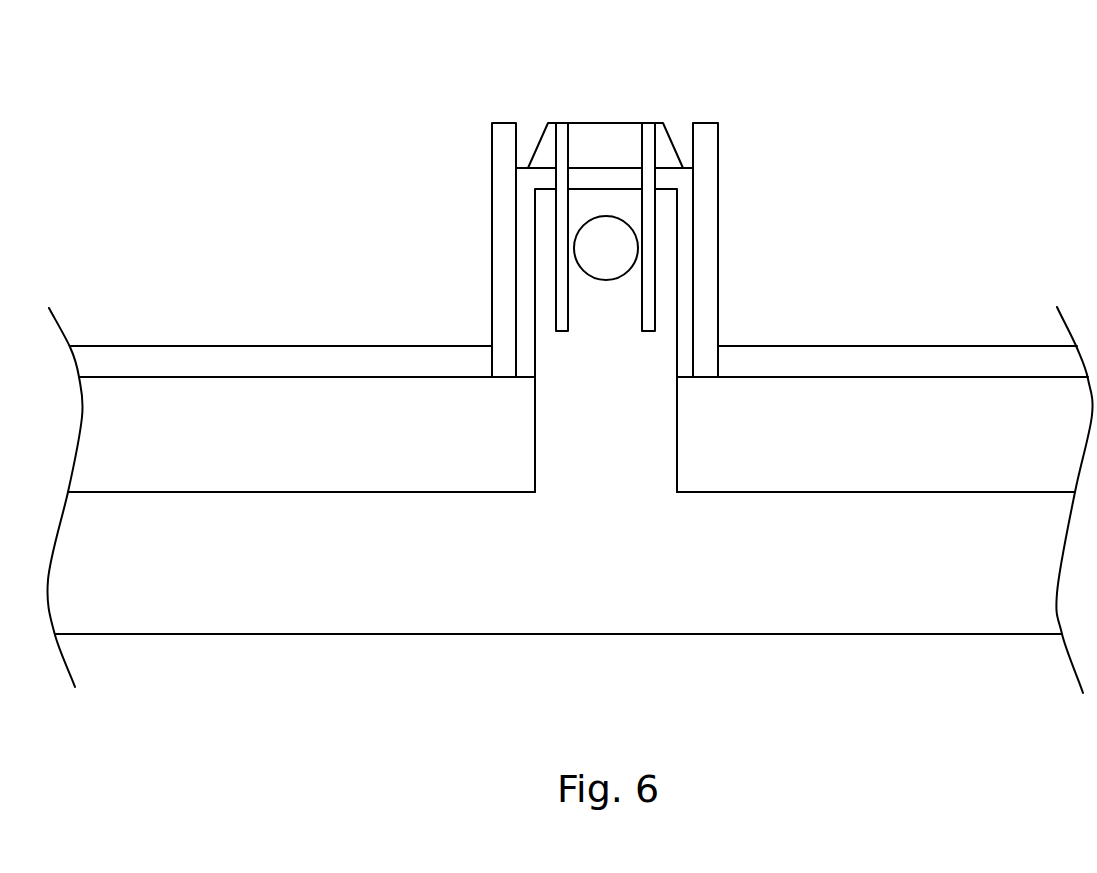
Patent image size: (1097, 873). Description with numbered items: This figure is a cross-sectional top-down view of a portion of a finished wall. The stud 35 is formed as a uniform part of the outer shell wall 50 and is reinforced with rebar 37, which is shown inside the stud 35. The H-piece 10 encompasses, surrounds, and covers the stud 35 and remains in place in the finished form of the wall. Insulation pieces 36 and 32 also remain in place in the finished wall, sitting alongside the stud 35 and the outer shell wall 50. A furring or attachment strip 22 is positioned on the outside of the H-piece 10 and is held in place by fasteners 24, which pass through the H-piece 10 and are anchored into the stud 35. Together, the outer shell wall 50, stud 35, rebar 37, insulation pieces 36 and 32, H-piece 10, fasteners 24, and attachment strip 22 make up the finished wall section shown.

The H-piece 10 is at (718, 162).
The furring or attachment strip 22 is at (605, 123).
The fasteners 24 is at (562, 332).
The insulation piece 32 is at (280, 345).
The stud 35 is at (677, 282).
The insulation piece 36 is at (300, 453).
The rebar 37 is at (605, 247).
The outer shell wall 50 is at (527, 634).